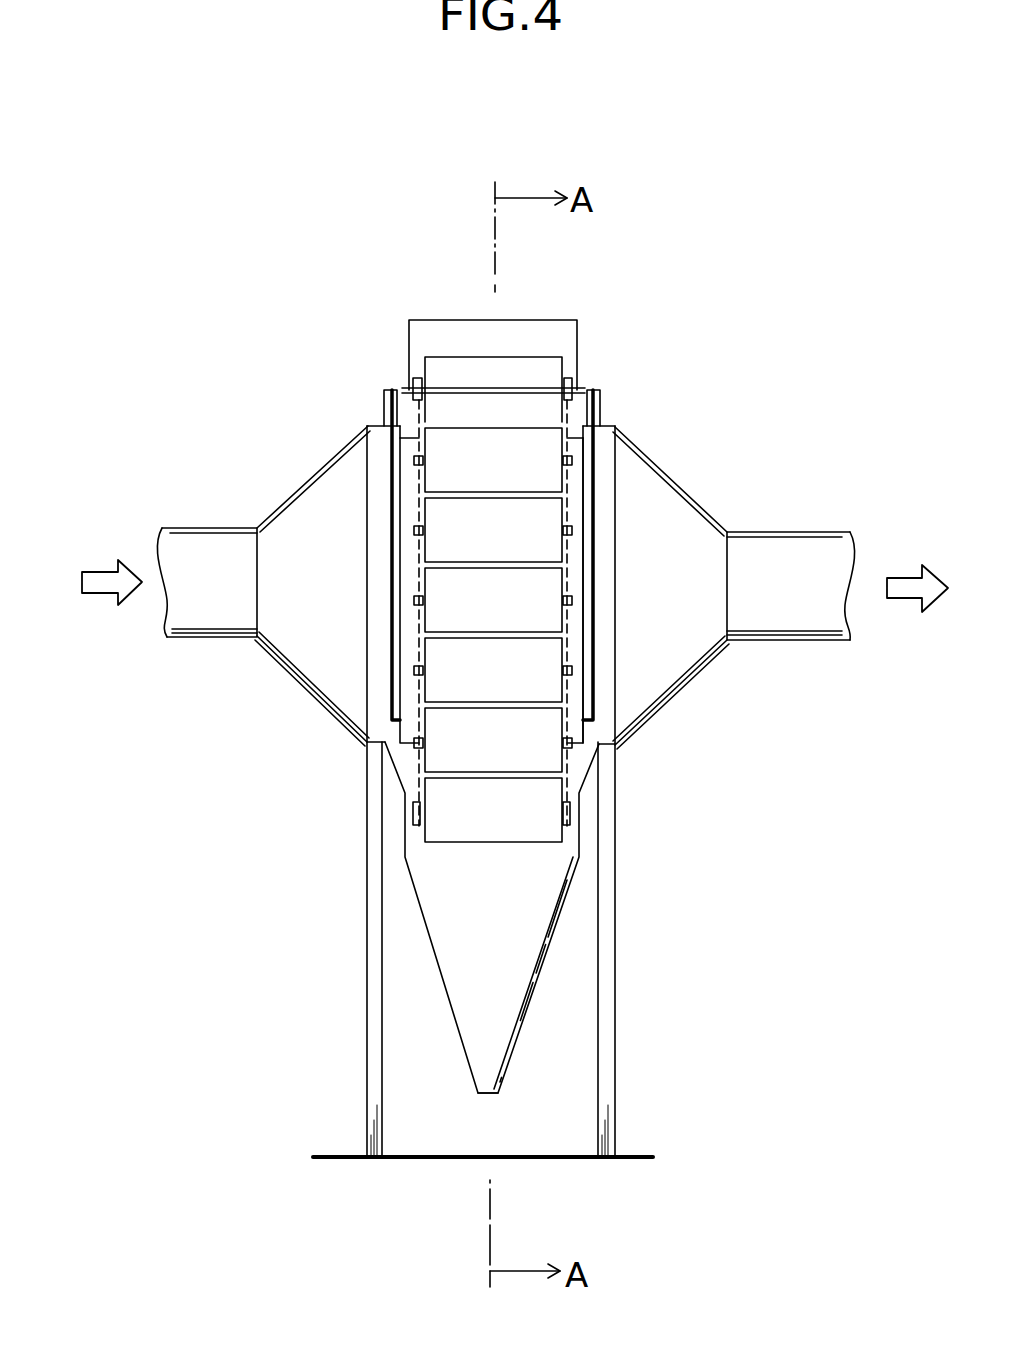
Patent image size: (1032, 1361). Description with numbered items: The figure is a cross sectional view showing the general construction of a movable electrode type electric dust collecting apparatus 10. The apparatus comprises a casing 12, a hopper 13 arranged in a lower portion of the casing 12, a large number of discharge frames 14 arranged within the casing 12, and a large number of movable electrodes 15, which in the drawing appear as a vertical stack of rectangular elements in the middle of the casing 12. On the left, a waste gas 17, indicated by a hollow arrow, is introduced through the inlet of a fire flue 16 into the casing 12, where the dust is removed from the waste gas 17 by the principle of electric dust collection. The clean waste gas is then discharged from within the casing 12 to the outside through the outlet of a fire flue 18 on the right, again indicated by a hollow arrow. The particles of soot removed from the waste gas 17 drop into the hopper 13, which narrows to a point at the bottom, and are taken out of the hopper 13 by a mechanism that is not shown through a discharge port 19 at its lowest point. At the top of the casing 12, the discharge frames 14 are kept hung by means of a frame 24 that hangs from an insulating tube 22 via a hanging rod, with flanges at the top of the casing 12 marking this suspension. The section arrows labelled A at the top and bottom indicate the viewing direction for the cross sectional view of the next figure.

The movable electrode type electric dust collecting apparatus 10 is at (668, 440).
The casing 12 is at (618, 510).
The hopper 13 is at (550, 950).
The discharge frame 14 is at (583, 687).
The movable electrode 15 is at (545, 765).
The fire flue 16 is at (207, 638).
The waste gas 17 is at (97, 588).
The fire flue 18 is at (797, 632).
The discharge port 19 is at (490, 1095).
The insulating tube 22 is at (385, 410).
The frame 24 is at (388, 495).